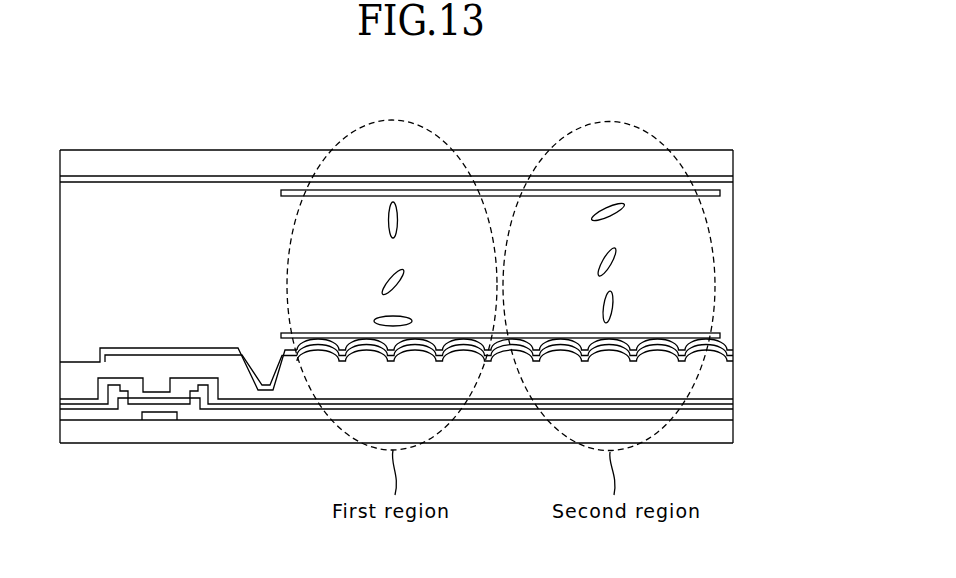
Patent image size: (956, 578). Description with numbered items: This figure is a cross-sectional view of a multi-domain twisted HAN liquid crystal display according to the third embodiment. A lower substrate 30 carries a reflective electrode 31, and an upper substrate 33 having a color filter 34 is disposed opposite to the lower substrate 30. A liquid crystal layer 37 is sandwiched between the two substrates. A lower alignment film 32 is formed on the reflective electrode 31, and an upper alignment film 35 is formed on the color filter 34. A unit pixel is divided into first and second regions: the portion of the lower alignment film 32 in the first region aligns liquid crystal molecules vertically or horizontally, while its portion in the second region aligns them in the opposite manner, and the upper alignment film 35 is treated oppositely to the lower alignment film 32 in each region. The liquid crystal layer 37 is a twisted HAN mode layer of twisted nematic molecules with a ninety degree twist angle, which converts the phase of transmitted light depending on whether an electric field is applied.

The lower substrate 30 is at (733, 433).
The reflective electrode 31 is at (733, 353).
The lower alignment film 32 is at (719, 335).
The upper substrate 33 is at (733, 160).
The color filter 34 is at (733, 182).
The upper alignment film 35 is at (719, 194).
The liquid crystal layer 37 is at (613, 262).